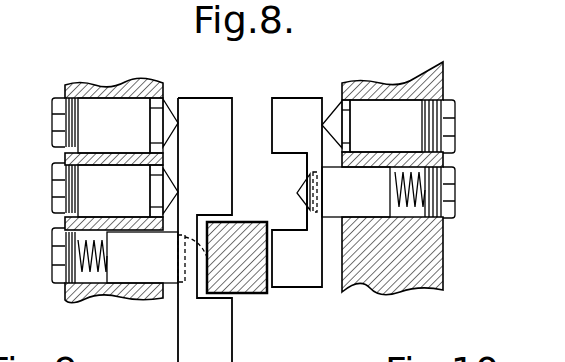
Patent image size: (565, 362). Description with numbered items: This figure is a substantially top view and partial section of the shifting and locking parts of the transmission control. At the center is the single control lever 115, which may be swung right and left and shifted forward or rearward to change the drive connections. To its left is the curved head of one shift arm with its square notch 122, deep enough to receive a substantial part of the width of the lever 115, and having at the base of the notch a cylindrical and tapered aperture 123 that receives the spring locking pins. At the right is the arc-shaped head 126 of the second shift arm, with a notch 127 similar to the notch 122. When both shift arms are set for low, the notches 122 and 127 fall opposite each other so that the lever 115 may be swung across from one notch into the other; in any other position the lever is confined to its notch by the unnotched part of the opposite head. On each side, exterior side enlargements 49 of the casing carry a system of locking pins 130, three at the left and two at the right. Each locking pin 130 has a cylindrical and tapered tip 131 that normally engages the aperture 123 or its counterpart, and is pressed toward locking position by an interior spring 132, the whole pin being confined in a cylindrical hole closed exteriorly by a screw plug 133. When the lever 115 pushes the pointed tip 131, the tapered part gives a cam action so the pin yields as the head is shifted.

The exterior side enlargements 49 is at (88, 83).
The locking pins 130 is at (110, 117).
The tip 131 is at (153, 122).
The interior spring 132 is at (92, 267).
The screw plug 133 is at (55, 187).
The square notch 122 is at (240, 213).
The arc-shaped head 126 is at (295, 265).
The notch 127 is at (297, 165).
The lever 115 is at (240, 267).
The cylindrical and tapered aperture 123 is at (192, 283).